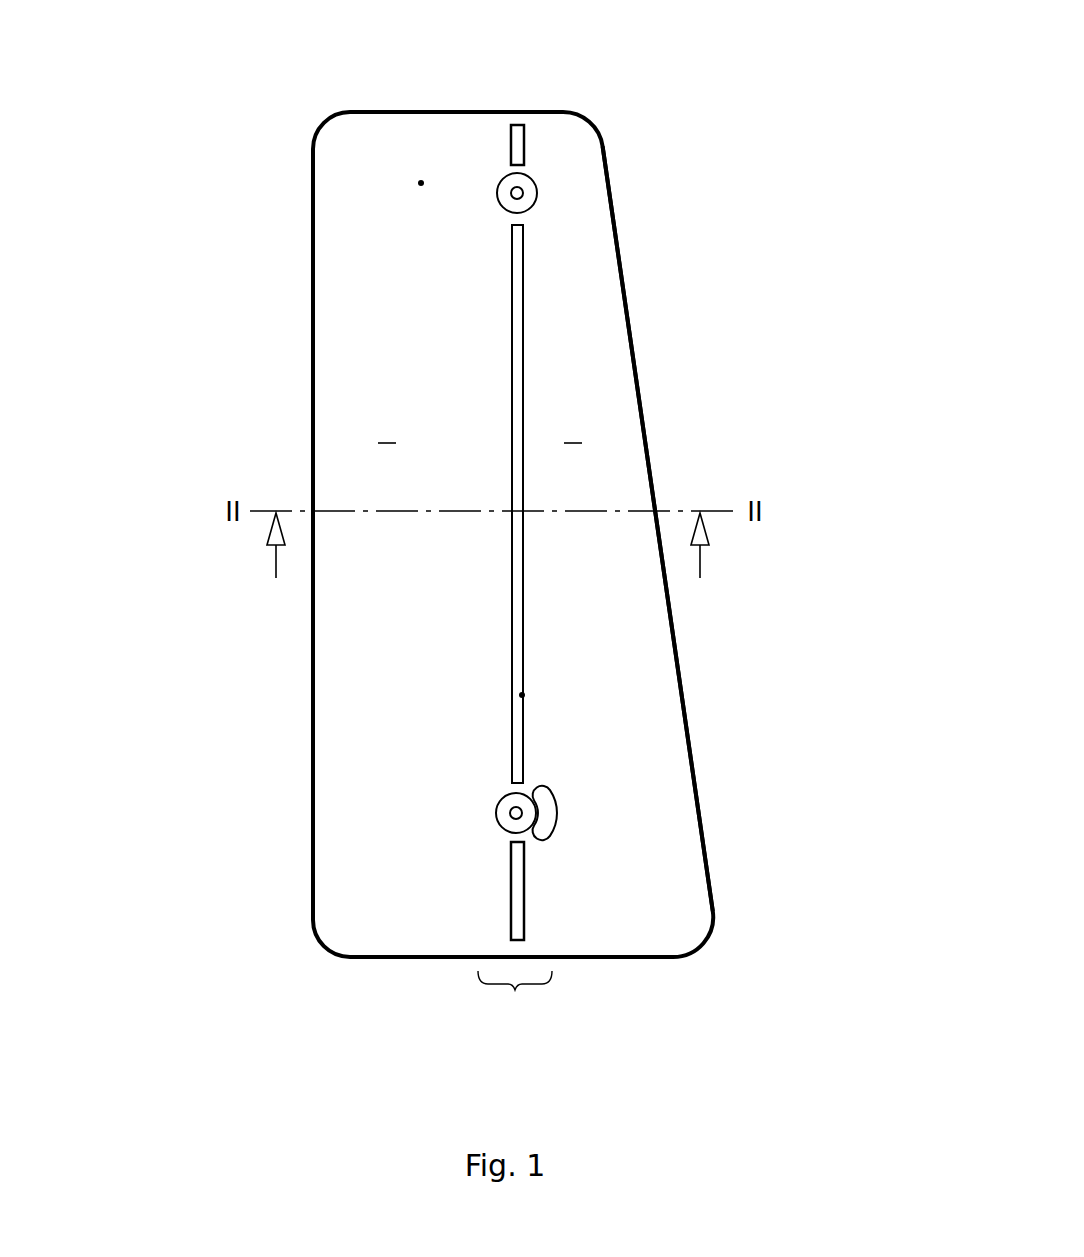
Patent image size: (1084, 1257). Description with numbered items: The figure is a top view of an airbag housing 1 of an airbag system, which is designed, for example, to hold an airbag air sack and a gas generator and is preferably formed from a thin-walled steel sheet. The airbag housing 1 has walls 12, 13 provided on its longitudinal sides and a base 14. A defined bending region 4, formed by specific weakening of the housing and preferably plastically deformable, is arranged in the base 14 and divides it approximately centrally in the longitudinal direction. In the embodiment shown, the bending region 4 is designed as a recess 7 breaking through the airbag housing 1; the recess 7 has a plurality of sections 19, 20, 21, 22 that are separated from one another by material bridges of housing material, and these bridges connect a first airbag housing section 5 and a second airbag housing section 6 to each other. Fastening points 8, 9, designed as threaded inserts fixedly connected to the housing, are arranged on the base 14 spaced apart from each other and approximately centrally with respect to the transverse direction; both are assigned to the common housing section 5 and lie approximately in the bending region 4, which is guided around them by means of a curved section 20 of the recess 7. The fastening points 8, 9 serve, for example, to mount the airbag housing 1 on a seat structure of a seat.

The airbag housing 1 is at (448, 112).
The defined bending region 4 is at (515, 990).
The first airbag housing section 5 is at (387, 429).
The second airbag housing section 6 is at (573, 429).
The recess 7 is at (525, 330).
The fastening point 8 is at (527, 183).
The fastening point 9 is at (503, 822).
The wall 12 is at (314, 356).
The wall 13 is at (637, 403).
The base 14 is at (421, 183).
The section of the recess 19 is at (520, 902).
The curved section 20 is at (555, 808).
The section of the recess 21 is at (522, 695).
The section of the recess 22 is at (524, 143).